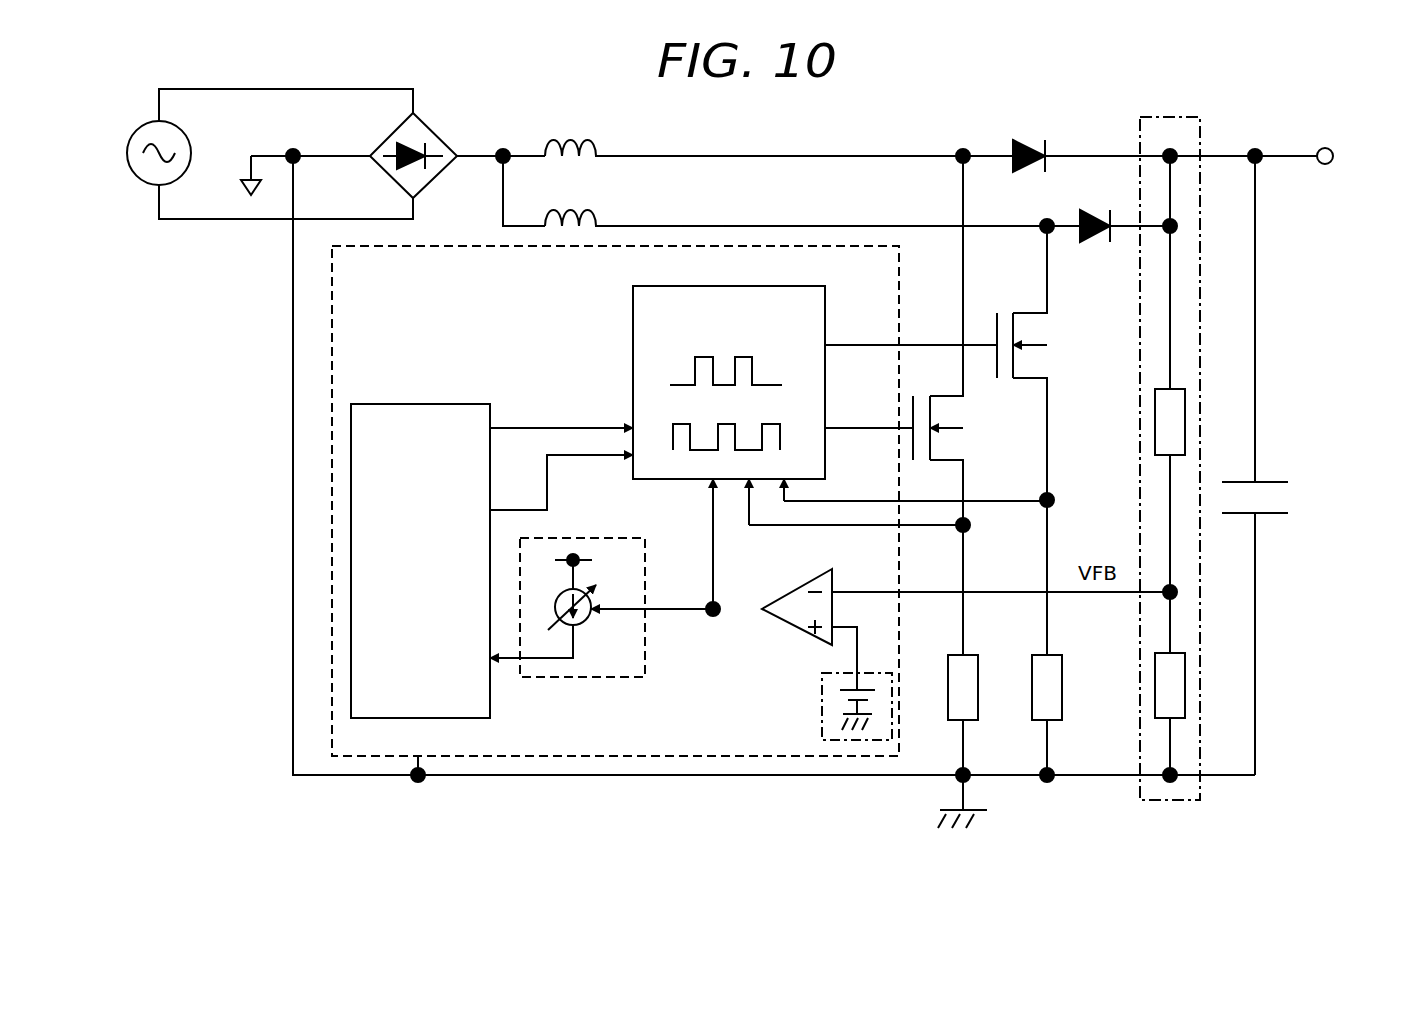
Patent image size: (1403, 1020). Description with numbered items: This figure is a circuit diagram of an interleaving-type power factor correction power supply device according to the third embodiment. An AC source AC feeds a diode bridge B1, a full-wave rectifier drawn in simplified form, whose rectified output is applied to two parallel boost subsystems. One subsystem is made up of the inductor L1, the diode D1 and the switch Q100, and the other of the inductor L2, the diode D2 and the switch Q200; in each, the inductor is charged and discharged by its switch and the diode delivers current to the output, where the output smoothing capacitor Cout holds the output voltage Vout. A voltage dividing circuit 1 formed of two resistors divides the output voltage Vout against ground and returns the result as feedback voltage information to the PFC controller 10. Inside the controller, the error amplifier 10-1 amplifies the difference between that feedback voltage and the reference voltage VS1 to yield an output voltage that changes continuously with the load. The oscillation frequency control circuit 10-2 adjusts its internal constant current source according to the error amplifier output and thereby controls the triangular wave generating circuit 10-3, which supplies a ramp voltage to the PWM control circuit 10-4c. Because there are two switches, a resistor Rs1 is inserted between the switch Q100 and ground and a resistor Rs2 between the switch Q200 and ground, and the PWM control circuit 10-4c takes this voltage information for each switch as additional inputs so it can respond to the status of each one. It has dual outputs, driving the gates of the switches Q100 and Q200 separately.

The voltage dividing circuit 1 is at (1140, 692).
The PFC controller 10 is at (332, 327).
The error amplifier 10-1 is at (832, 582).
The oscillation frequency control circuit 10-2 is at (580, 678).
The triangular wave generating circuit 10-3 is at (445, 718).
The PWM control circuit 10-4c is at (633, 342).
The AC power source AC is at (270, 154).
The diode bridge B1 is at (414, 147).
The inductor L1 is at (570, 127).
The inductor L2 is at (570, 197).
The diode D1 is at (1029, 137).
The diode D2 is at (1094, 209).
The switch Q100 is at (969, 465).
The switch Q200 is at (1053, 500).
The resistor Rs1 is at (980, 706).
The resistor Rs2 is at (1064, 706).
The output smoothing capacitor Cout is at (1269, 465).
The output voltage Vout is at (1351, 157).
The reference voltage VS1 is at (822, 695).